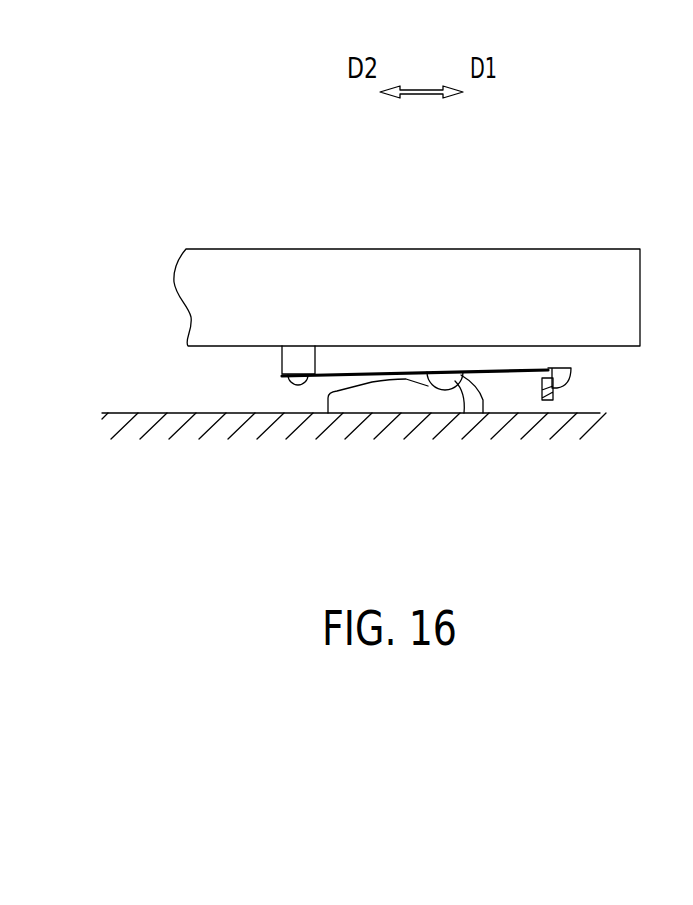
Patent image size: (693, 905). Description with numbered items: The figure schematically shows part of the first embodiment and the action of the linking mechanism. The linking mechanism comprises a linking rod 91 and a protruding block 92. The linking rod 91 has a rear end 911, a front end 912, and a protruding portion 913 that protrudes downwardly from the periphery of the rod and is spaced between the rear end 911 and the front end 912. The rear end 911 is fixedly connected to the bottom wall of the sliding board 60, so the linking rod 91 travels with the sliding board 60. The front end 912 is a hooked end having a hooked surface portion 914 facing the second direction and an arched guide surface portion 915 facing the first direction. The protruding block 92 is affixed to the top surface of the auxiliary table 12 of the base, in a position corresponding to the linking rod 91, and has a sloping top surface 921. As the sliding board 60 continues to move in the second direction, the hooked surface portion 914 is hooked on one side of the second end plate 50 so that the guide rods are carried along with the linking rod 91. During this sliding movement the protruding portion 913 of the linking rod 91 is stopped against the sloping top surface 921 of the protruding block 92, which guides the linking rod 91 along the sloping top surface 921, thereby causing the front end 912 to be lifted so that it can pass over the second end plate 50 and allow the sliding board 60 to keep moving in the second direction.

The sliding board 60 is at (281, 248).
The linking rod 91 is at (389, 373).
The rear end 911 is at (281, 377).
The sloping top surface 921 is at (423, 384).
The front end 912 is at (558, 368).
The protruding block 92 is at (367, 403).
The protruding portion 913 is at (483, 413).
The hooked surface portion 914 is at (541, 380).
The second end plate 50 is at (557, 400).
The arched guide surface portion 915 is at (571, 380).
The auxiliary table 12 is at (135, 411).